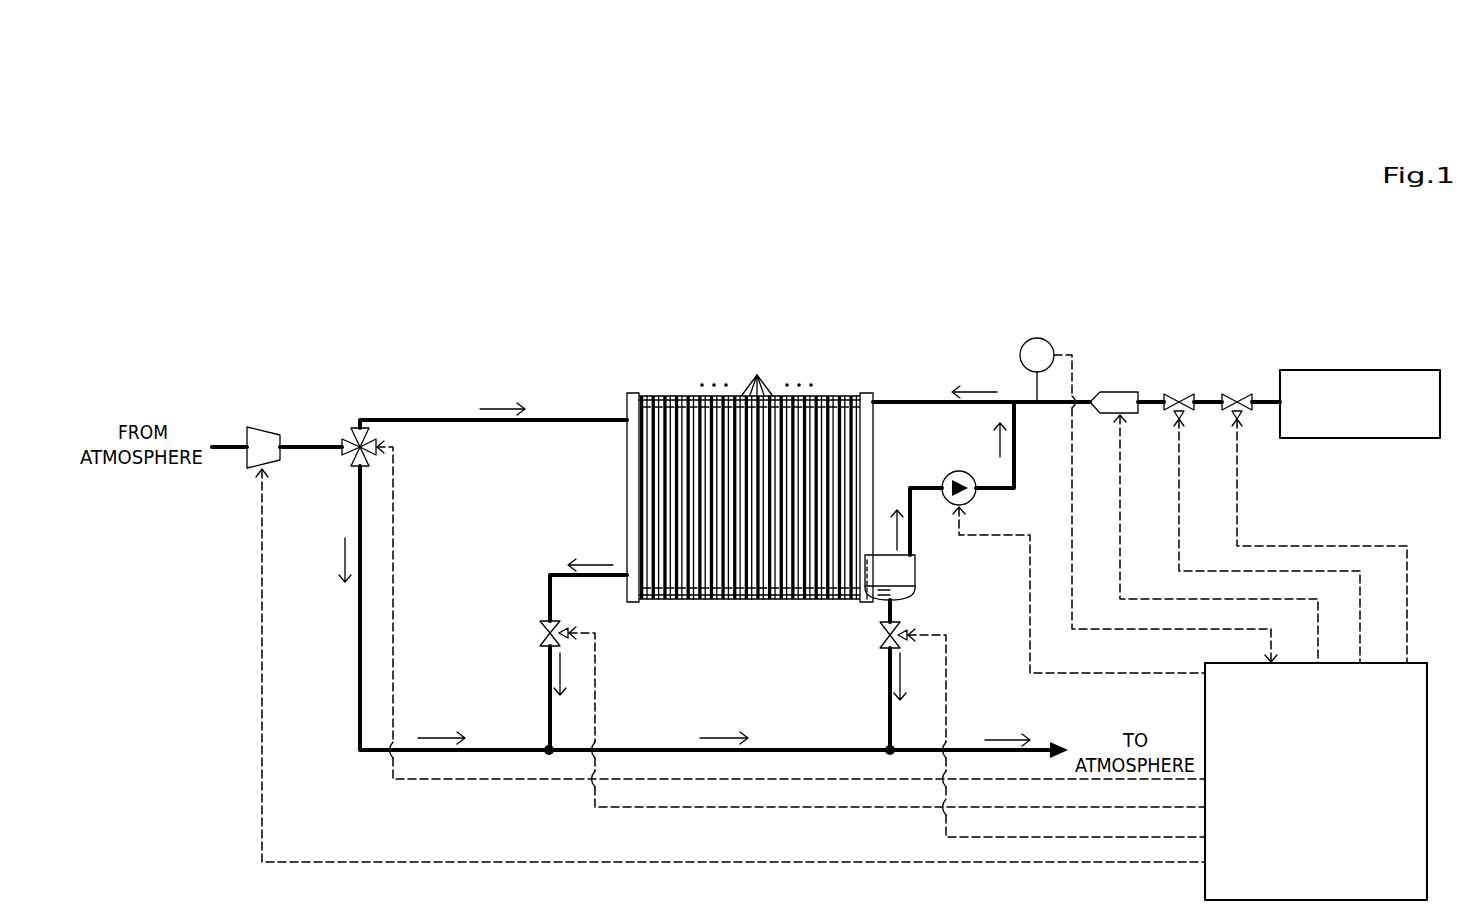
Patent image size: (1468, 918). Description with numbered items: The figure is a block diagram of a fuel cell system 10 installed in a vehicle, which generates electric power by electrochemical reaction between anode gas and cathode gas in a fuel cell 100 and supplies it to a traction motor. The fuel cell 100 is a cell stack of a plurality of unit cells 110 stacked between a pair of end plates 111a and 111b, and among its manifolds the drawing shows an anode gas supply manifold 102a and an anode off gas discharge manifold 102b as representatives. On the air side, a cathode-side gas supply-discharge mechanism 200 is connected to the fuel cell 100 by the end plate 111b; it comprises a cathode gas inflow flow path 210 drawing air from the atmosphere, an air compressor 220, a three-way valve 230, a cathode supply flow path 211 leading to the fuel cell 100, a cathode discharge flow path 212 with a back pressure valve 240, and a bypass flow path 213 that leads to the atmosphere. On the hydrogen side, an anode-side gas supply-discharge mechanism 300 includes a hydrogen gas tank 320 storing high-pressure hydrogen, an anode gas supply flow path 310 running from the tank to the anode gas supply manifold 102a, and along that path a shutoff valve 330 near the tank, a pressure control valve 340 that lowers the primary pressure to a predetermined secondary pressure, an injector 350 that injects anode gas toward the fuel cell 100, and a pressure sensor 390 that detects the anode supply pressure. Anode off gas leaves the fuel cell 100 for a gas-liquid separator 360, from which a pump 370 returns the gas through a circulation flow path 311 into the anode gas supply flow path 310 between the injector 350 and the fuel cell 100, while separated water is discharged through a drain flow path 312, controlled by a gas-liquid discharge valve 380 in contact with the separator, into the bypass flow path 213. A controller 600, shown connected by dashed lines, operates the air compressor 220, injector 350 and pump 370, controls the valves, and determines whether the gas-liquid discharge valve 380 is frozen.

The fuel cell system 10 is at (238, 240).
The fuel cell 100 is at (788, 350).
The unit cell 110 is at (756, 370).
The end plate 111a is at (866, 393).
The end plate 111b is at (633, 393).
The anode gas supply manifold 102a is at (680, 395).
The anode off gas discharge manifold 102b is at (735, 598).
The cathode-side gas supply-discharge mechanism 200 is at (320, 343).
The cathode gas inflow flow path 210 is at (223, 445).
The cathode supply flow path 211 is at (440, 419).
The cathode discharge flow path 212 is at (550, 585).
The bypass flow path 213 is at (358, 645).
The air compressor 220 is at (262, 427).
The three-way valve 230 is at (343, 440).
The back pressure valve 240 is at (540, 622).
The anode-side gas supply-discharge mechanism 300 is at (1220, 298).
The anode gas supply flow path 310 is at (905, 400).
The circulation flow path 311 is at (1015, 487).
The drain flow path 312 is at (885, 700).
The hydrogen gas tank 320 is at (1327, 370).
The shutoff valve 330 is at (1243, 395).
The pressure control valve 340 is at (1185, 395).
The injector 350 is at (1135, 392).
The gas-liquid separator 360 is at (947, 565).
The pump 370 is at (955, 471).
The gas-liquid discharge valve 380 is at (898, 628).
The pressure sensor 390 is at (1050, 340).
The controller 600 is at (1413, 660).